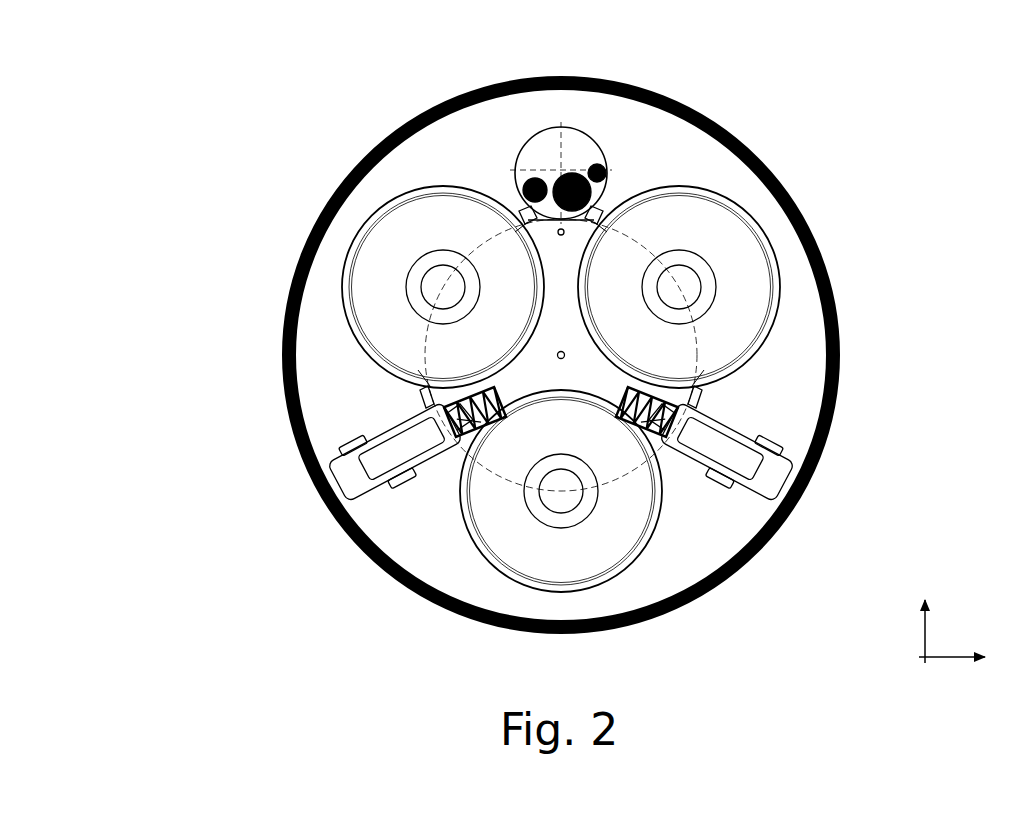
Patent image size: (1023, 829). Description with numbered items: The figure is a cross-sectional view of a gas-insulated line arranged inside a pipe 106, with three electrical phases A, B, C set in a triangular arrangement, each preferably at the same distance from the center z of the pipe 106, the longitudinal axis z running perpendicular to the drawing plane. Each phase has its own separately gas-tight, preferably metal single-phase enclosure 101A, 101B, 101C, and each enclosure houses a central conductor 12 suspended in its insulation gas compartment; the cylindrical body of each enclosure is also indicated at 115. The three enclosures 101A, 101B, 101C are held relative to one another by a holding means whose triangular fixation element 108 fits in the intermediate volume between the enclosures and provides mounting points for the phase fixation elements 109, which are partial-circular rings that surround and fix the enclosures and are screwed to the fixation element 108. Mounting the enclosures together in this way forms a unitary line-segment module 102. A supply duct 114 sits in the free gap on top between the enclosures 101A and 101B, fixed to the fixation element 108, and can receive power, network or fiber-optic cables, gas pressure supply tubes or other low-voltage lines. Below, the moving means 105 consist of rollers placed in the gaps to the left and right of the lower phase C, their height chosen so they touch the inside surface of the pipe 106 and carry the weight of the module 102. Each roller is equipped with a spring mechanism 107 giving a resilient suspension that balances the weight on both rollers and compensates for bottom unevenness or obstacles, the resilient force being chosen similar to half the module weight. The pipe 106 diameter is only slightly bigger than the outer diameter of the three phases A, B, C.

The line-segment module 102 is at (138, 120).
The pipe 106 is at (612, 82).
The triangular fixation element 108 is at (468, 137).
The supply duct 114 is at (532, 137).
The phase fixation element 109 is at (408, 192).
The central conductor 12 is at (413, 288).
The cylinder 115 is at (392, 313).
The single-phase enclosure 101A is at (349, 238).
The single-phase enclosure 101B is at (778, 238).
The single-phase enclosure 101C is at (591, 537).
The spring mechanism 107 is at (447, 408).
The moving means 105 is at (569, 440).
The longitudinal axis z is at (566, 354).
The electrical phase A is at (353, 257).
The electrical phase B is at (770, 250).
The electrical phase C is at (628, 562).